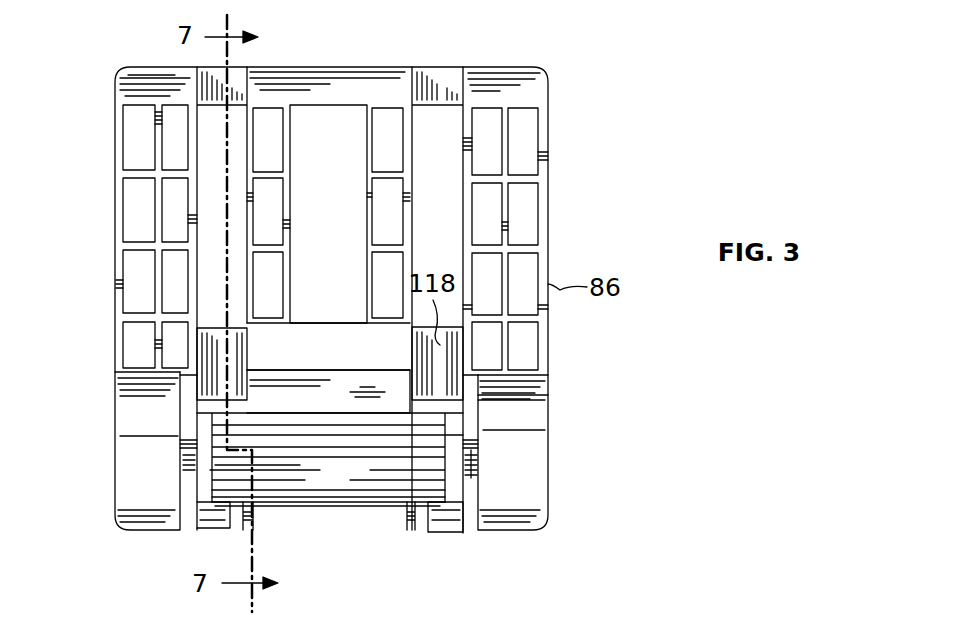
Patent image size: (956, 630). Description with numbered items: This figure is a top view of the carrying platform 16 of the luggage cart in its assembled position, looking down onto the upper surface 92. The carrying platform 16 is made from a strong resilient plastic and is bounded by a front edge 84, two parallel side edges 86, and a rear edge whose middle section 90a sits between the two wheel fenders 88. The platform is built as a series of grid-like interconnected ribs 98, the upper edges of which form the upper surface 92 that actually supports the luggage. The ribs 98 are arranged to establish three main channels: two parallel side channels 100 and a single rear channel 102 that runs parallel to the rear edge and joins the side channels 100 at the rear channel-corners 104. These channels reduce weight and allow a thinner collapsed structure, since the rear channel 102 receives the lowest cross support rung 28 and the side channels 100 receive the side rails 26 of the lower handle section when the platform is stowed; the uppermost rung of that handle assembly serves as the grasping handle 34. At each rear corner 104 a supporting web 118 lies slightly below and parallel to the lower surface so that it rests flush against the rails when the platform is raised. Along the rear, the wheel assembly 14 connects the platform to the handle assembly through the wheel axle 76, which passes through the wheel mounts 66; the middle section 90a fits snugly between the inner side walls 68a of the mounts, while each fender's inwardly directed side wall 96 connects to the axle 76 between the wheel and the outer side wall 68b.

The wheel assembly 14 is at (552, 505).
The carrying platform 16 is at (131, 66).
The side rails 26 is at (253, 516).
The cross support rungs 28 is at (360, 430).
The grasping handle 34 is at (360, 492).
The wheel mount 66 is at (210, 518).
The inner side wall 68a is at (442, 505).
The outer side wall 68b is at (197, 520).
The wheel axle 76 is at (470, 470).
The front edge 84 is at (305, 67).
The side edges 86 is at (115, 248).
The wheel fenders 88 is at (128, 408).
The middle section 90a is at (272, 320).
The upper surface 92 is at (530, 94).
The side wall 96 is at (478, 398).
The ribs 98 is at (523, 178).
The side channels 100 is at (418, 142).
The rear channel 102 is at (355, 324).
The rear channel-corners 104 is at (405, 340).
The supporting web 118 is at (210, 337).